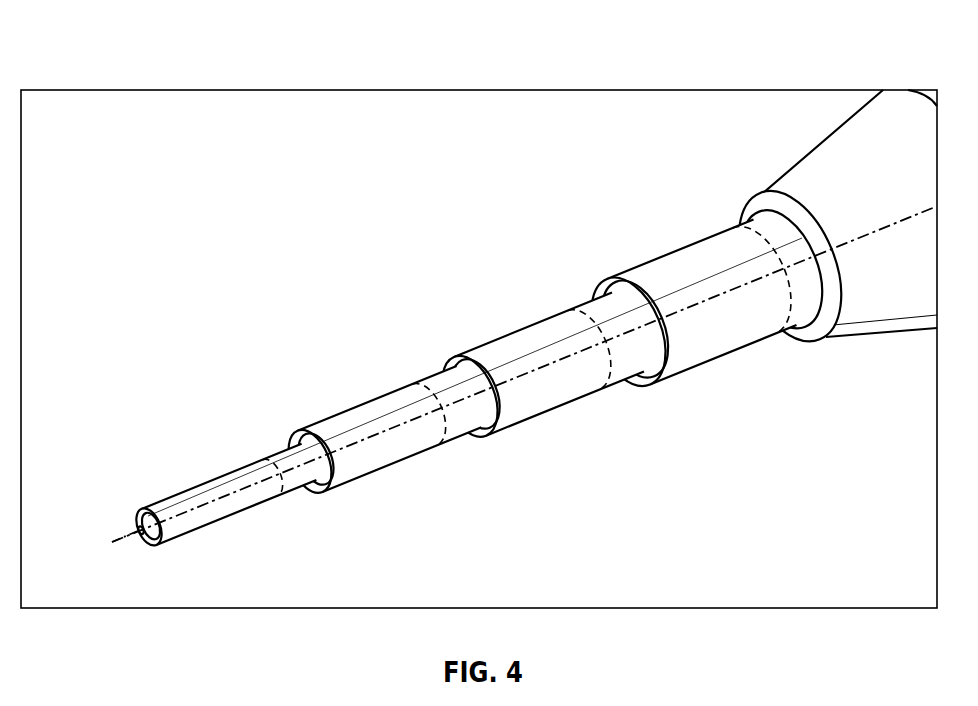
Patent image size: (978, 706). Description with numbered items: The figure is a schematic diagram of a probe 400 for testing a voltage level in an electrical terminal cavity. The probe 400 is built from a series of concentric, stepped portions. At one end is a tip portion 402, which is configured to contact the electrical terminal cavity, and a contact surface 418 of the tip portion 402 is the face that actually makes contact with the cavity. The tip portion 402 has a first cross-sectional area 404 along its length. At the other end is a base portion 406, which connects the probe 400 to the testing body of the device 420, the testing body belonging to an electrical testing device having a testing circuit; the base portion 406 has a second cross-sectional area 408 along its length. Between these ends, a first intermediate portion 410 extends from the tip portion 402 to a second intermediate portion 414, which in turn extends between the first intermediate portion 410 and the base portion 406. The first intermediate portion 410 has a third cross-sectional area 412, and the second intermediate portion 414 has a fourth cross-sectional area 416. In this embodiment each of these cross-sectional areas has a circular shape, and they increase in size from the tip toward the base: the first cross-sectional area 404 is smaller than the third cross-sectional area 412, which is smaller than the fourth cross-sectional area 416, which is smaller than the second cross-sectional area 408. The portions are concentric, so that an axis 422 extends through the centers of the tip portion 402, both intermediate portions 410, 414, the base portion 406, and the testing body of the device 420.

The probe 400 is at (149, 71).
The tip portion 402 is at (176, 486).
The first cross-sectional area 404 is at (283, 506).
The base portion 406 is at (632, 254).
The second cross-sectional area 408 is at (782, 340).
The first intermediate portion 410 is at (323, 410).
The third cross-sectional area 412 is at (445, 455).
The second intermediate portion 414 is at (490, 327).
The fourth cross-sectional area 416 is at (610, 397).
The contact surface 418 is at (155, 540).
The testing body of the device 420 is at (811, 176).
The axis 422 is at (111, 526).